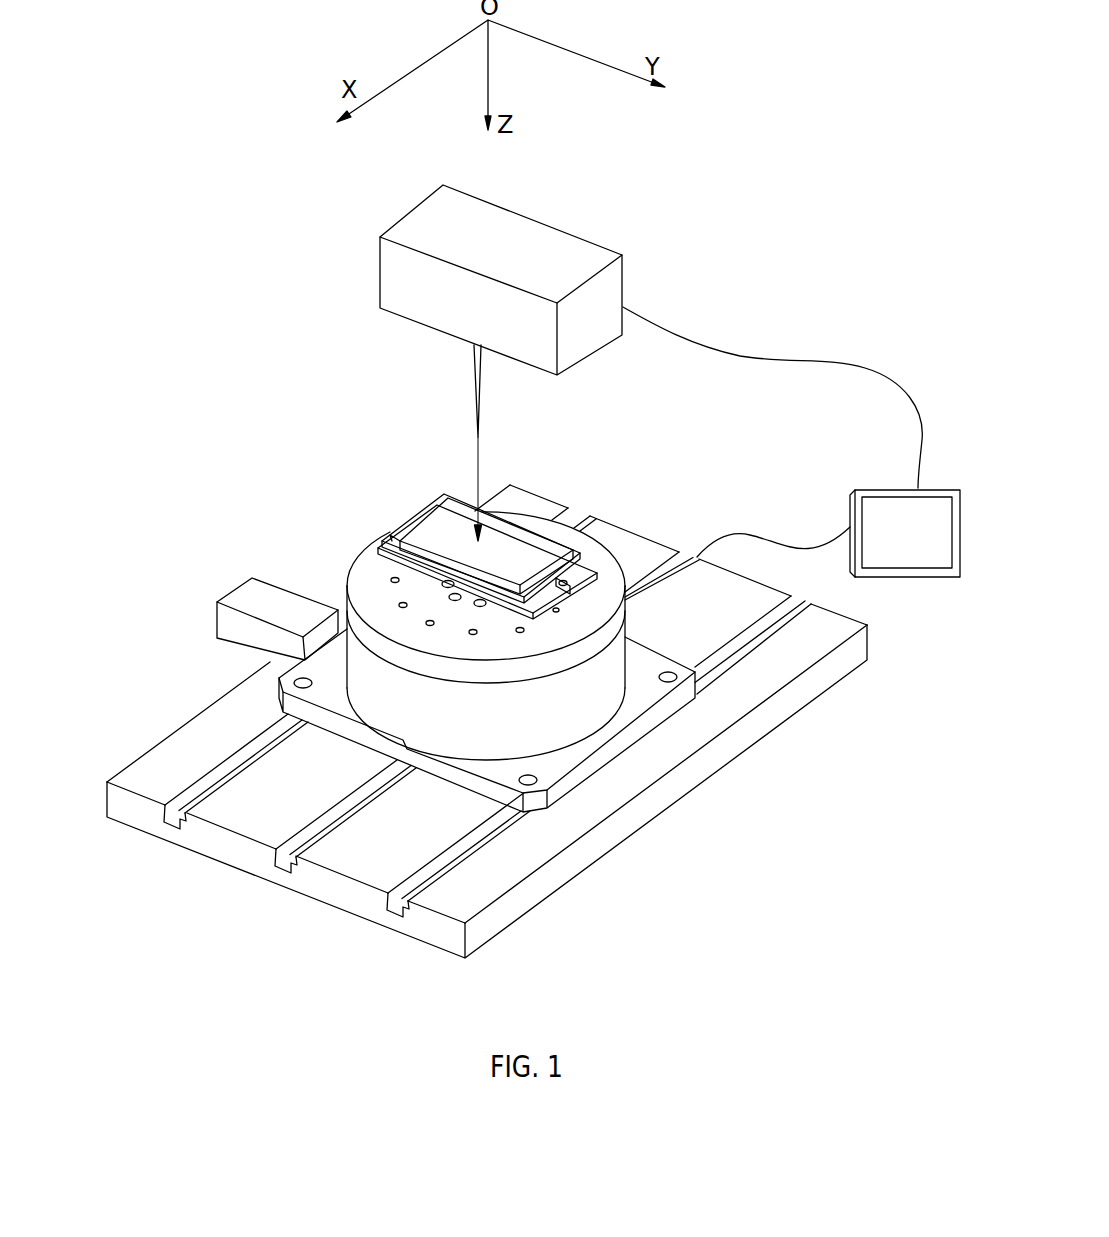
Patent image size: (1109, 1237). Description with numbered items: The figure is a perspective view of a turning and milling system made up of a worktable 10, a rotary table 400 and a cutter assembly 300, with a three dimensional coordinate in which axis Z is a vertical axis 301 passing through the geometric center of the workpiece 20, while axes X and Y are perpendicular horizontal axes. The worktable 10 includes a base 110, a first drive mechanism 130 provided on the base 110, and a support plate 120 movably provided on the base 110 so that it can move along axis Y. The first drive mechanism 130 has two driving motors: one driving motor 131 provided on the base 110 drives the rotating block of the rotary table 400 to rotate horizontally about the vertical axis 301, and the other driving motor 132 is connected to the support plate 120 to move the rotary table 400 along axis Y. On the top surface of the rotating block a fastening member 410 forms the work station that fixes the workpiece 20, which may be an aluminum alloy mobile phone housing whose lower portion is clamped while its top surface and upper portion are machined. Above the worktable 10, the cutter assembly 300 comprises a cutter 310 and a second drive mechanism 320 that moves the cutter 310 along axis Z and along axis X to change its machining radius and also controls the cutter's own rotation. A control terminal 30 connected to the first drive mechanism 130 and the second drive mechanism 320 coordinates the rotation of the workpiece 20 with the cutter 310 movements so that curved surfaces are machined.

The worktable 10 is at (476, 721).
The base 110 is at (222, 717).
The support plate 120 is at (583, 773).
The first drive mechanism 130 is at (476, 676).
The driving motor 131 is at (628, 713).
The driving motor 132 is at (235, 600).
The workpiece 20 is at (413, 494).
The control terminal 30 is at (880, 503).
The cutter assembly 300 is at (645, 340).
The vertical axis 301 is at (477, 463).
The cutter 310 is at (473, 380).
The second drive mechanism 320 is at (590, 258).
The rotary table 400 is at (373, 570).
The fastening member 410 is at (390, 536).